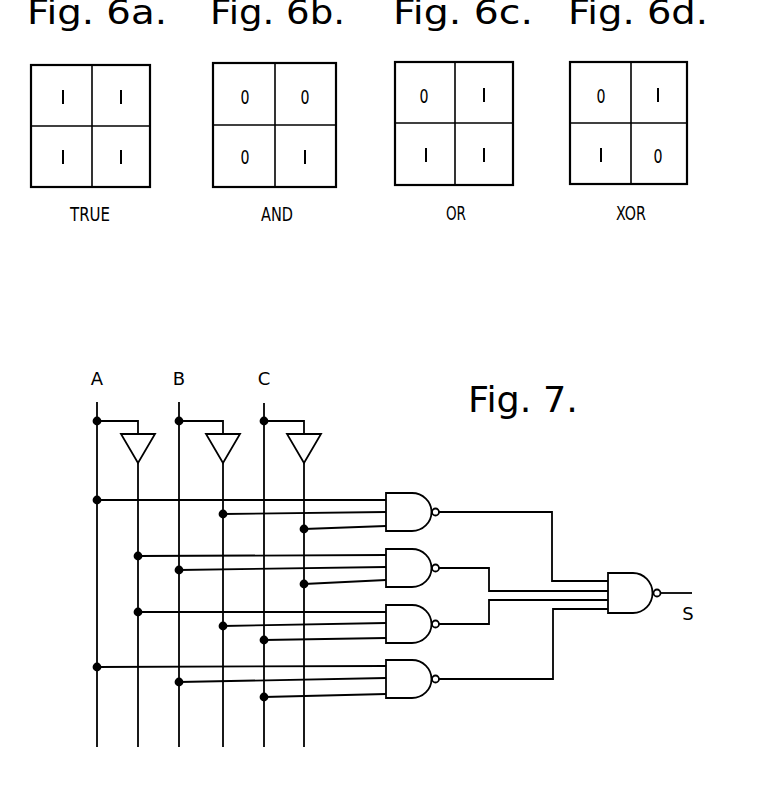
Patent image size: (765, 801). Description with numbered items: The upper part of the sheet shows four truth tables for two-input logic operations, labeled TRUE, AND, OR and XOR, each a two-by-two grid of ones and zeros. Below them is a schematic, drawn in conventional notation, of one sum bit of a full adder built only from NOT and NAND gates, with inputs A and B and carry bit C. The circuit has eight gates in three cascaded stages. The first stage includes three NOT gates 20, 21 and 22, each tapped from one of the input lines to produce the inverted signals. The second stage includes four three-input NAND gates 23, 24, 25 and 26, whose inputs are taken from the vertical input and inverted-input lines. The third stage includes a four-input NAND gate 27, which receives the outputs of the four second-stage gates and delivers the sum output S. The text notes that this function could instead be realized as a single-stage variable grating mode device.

The NOT gate 20 is at (141, 433).
The NOT gate 21 is at (226, 433).
The NOT gate 22 is at (307, 433).
The three-input NAND gate 23 is at (415, 494).
The three-input NAND gate 24 is at (426, 560).
The three-input NAND gate 25 is at (426, 616).
The three-input NAND gate 26 is at (426, 671).
The four-input NAND gate 27 is at (650, 578).